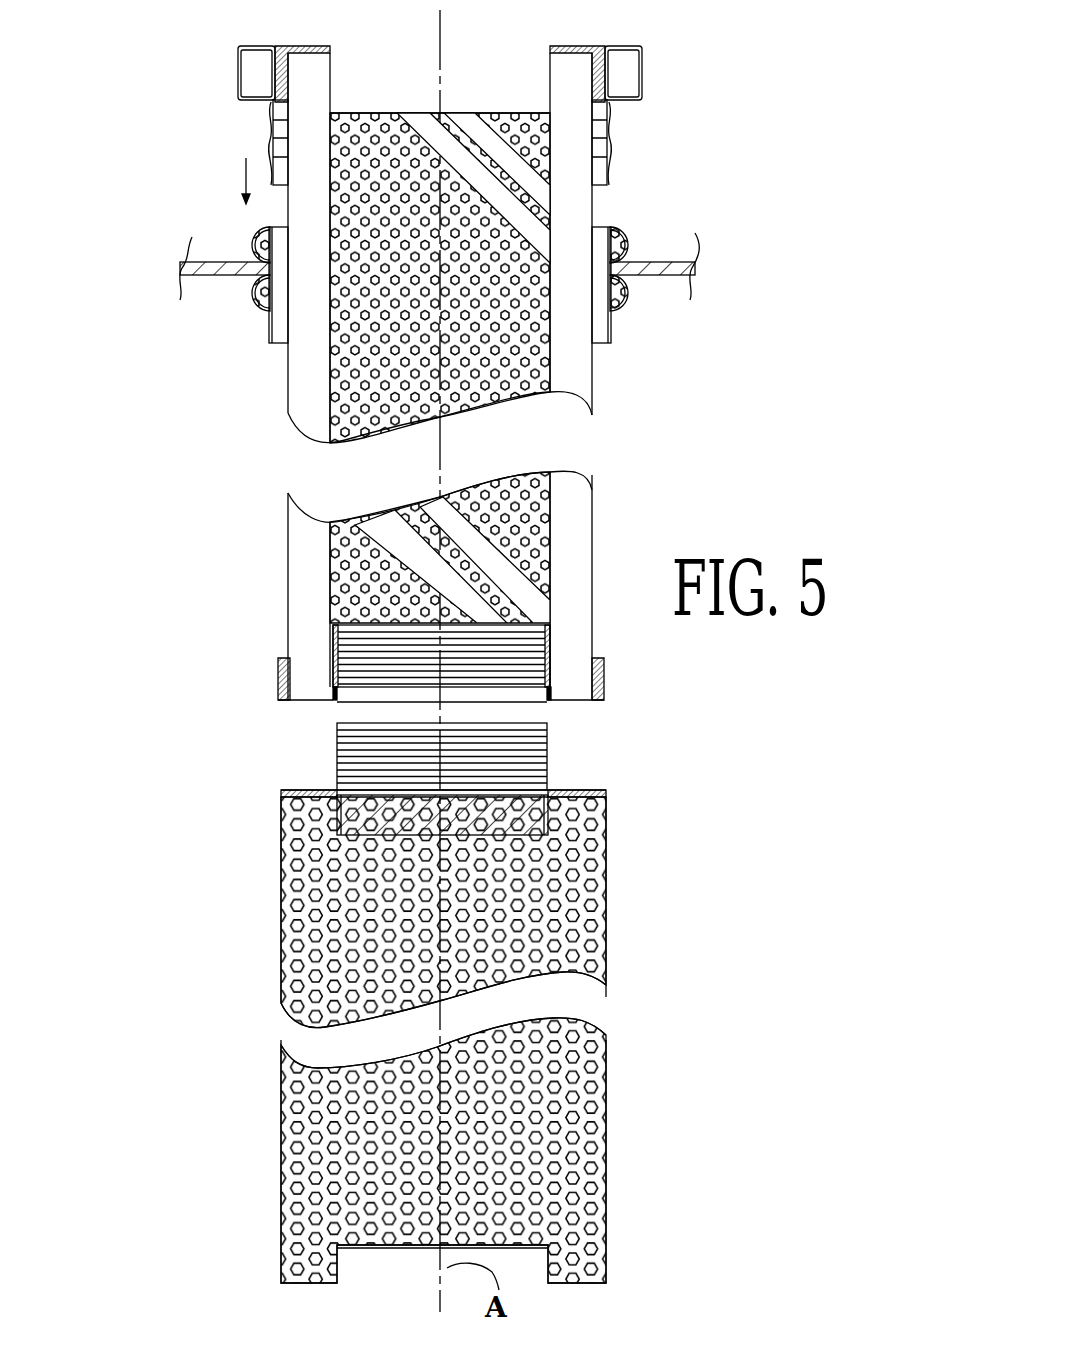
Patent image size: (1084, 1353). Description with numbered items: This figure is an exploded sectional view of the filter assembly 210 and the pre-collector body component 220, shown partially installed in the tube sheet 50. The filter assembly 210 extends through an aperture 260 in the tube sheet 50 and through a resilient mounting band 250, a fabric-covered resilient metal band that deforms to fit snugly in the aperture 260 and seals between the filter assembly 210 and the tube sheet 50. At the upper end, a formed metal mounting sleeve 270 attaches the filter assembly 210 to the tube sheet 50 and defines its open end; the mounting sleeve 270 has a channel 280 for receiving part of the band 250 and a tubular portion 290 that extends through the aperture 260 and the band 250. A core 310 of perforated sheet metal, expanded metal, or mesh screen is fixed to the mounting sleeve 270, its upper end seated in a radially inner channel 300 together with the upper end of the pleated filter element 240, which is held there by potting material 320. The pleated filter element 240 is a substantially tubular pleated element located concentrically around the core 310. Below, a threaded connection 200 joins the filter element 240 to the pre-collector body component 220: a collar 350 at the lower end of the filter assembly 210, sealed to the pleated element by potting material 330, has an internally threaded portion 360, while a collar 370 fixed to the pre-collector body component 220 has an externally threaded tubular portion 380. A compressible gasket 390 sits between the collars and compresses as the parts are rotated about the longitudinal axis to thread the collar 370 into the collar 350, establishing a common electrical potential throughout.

The tube sheet 50 is at (633, 270).
The threaded connection 200 is at (625, 660).
The filter assembly 210 is at (650, 512).
The pre-collector body component 220 is at (608, 888).
The pleated filter element 240 is at (315, 392).
The resilient mounting band 250 is at (620, 228).
The aperture 260 is at (623, 303).
The mounting sleeve 270 is at (618, 45).
The channel 280 is at (637, 78).
The tubular portion 290 is at (608, 147).
The radially inner channel 300 is at (316, 50).
The core 310 is at (288, 492).
The potting material 320 is at (281, 48).
The potting material 330 is at (283, 652).
The collar 350 is at (280, 688).
The internally threaded portion 360 is at (350, 700).
The collar 370 is at (281, 822).
The externally threaded tubular portion 380 is at (337, 740).
The compressible gasket 390 is at (282, 793).